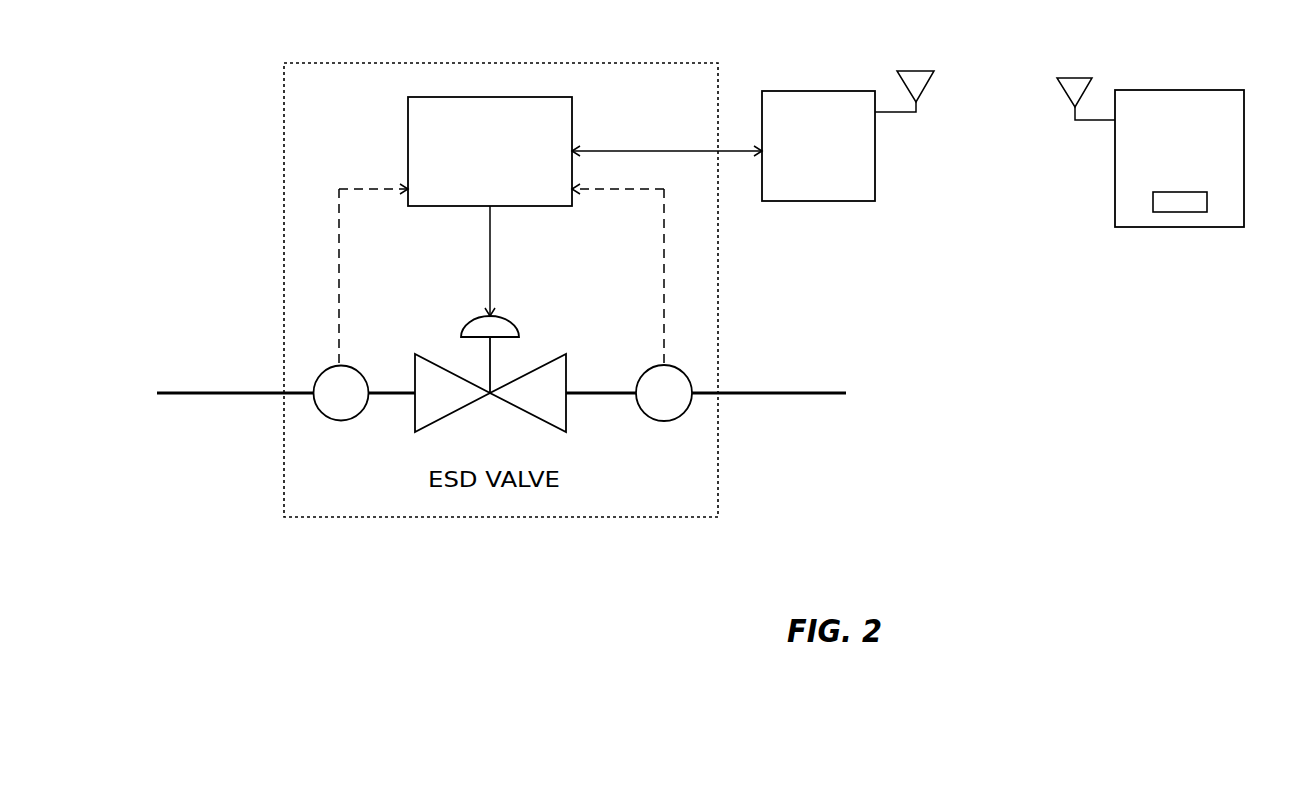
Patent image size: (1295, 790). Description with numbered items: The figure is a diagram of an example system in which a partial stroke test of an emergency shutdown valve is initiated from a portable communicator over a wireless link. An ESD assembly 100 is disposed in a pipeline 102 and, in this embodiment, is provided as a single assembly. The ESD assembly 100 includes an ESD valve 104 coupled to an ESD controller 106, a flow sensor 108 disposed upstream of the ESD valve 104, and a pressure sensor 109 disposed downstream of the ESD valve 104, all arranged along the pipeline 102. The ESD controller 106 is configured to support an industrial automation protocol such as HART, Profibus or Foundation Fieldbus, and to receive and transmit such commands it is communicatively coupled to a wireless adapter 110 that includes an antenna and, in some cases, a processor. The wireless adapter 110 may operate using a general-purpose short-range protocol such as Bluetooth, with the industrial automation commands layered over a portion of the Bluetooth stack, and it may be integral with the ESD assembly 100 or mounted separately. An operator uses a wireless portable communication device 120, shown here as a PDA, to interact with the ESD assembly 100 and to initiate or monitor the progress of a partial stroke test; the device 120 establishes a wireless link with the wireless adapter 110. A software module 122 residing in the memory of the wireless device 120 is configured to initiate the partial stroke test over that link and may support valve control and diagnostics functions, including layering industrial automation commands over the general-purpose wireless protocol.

The ESD assembly 100 is at (346, 63).
The pipeline 102 is at (777, 392).
The ESD valve 104 is at (556, 360).
The ESD controller 106 is at (541, 207).
The flow sensor 108 is at (647, 417).
The pressure sensor 109 is at (320, 416).
The wireless adapter 110 is at (815, 202).
The wireless portable communication device 120 is at (1141, 90).
The software module 122 is at (1170, 212).